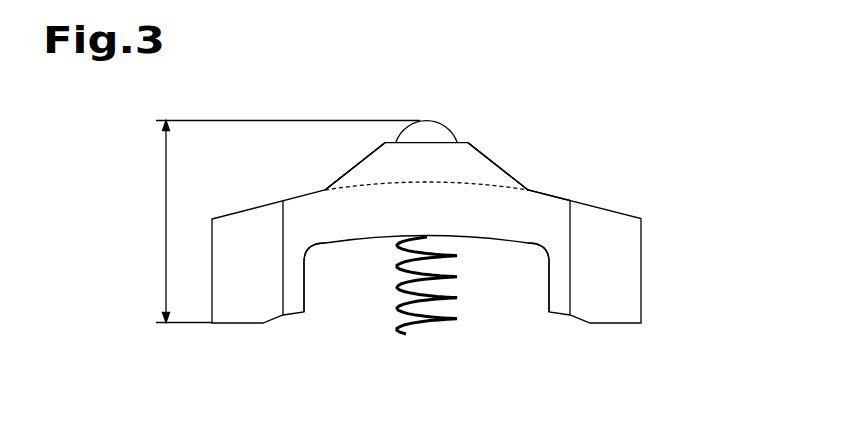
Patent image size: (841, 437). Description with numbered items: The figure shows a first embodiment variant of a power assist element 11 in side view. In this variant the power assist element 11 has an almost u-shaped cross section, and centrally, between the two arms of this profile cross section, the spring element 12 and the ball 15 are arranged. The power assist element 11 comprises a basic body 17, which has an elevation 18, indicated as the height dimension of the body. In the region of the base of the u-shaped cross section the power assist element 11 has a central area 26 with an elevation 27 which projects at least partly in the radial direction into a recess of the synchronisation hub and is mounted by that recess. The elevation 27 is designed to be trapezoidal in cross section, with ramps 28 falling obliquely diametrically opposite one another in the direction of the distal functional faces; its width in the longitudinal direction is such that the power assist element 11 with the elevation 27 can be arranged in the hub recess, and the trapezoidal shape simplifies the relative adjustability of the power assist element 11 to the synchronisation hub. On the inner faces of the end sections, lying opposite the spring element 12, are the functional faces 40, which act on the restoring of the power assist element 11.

The power assist element 11 is at (622, 192).
The spring element 12 is at (427, 338).
The ball 15 is at (404, 118).
The basic body 17 is at (500, 200).
The elevation 18 is at (162, 213).
The central area 26 is at (358, 147).
The elevation 27 is at (452, 178).
The ramps 28 is at (342, 158).
The functional faces 40 is at (308, 297).